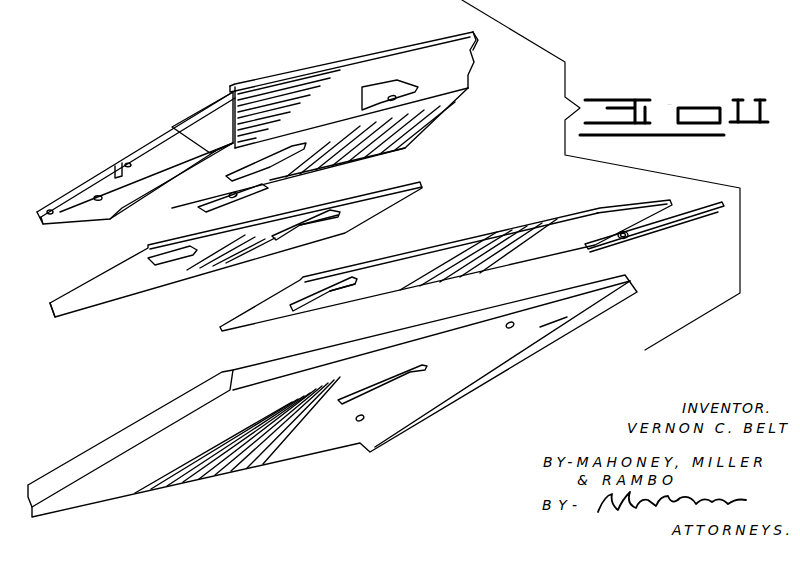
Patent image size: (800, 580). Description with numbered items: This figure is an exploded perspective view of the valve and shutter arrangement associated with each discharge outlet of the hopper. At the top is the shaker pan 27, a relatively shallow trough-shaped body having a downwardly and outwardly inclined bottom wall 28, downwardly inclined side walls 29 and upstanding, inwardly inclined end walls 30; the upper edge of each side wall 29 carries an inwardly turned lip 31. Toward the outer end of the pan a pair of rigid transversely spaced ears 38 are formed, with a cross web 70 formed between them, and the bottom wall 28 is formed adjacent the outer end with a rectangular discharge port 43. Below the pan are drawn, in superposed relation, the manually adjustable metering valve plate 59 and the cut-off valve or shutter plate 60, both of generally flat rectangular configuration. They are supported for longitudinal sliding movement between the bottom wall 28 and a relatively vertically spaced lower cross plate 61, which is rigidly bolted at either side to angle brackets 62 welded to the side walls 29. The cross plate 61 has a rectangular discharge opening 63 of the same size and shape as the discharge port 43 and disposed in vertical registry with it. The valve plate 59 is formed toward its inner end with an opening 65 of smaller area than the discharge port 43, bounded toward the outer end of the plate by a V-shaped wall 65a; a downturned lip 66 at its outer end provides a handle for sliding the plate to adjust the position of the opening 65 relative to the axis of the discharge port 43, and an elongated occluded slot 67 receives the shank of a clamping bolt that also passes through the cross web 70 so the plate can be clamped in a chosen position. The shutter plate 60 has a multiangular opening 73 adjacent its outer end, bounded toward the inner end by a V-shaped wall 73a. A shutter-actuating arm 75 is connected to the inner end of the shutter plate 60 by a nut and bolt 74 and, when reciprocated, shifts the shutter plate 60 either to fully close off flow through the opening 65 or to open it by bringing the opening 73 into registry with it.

The shaker pan 27 is at (315, 84).
The bottom wall 28 is at (452, 108).
The side wall 29 is at (452, 45).
The end wall 30 is at (215, 118).
The inwardly turned lip 31 is at (384, 52).
The ear 38 is at (76, 190).
The discharge port 43 is at (297, 142).
The metering valve plate 59 is at (190, 233).
The shutter plate 60 is at (433, 248).
The lower cross plate 61 is at (210, 387).
The angle bracket 62 is at (403, 86).
The discharge opening 63 is at (408, 367).
The opening 65 is at (317, 227).
The V-shaped wall 65a is at (293, 232).
The downturned lip 66 is at (75, 297).
The occluded slot 67 is at (173, 262).
The cross web 70 is at (84, 212).
The multiangular opening 73 is at (305, 300).
The V-shaped wall 73a is at (340, 290).
The nut and bolt 74 is at (627, 238).
The shutter-actuating arm 75 is at (715, 215).